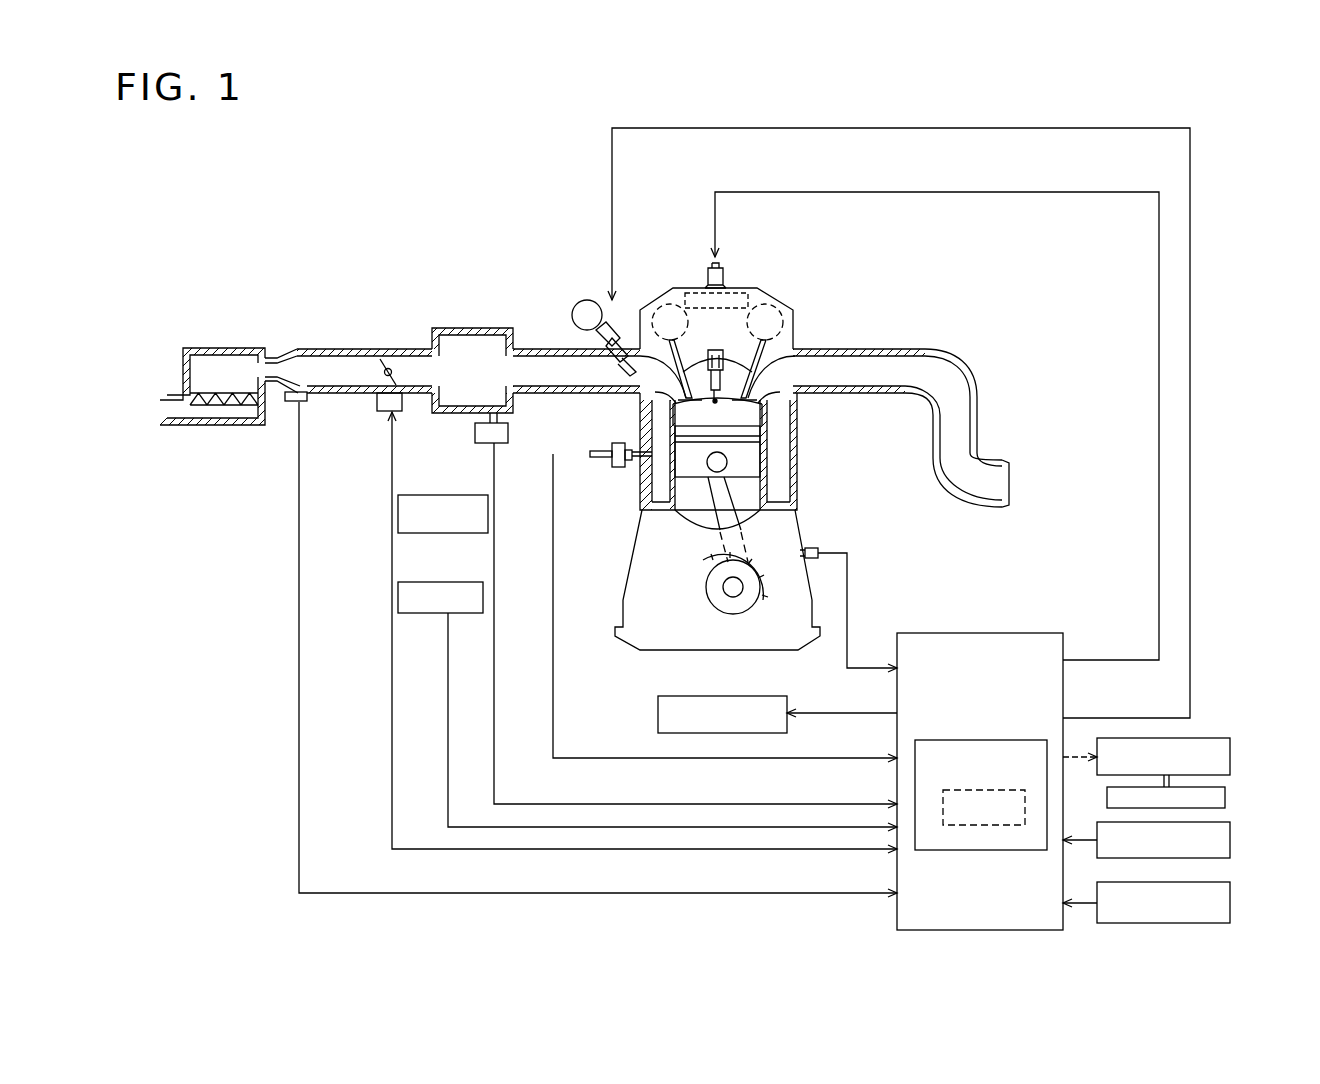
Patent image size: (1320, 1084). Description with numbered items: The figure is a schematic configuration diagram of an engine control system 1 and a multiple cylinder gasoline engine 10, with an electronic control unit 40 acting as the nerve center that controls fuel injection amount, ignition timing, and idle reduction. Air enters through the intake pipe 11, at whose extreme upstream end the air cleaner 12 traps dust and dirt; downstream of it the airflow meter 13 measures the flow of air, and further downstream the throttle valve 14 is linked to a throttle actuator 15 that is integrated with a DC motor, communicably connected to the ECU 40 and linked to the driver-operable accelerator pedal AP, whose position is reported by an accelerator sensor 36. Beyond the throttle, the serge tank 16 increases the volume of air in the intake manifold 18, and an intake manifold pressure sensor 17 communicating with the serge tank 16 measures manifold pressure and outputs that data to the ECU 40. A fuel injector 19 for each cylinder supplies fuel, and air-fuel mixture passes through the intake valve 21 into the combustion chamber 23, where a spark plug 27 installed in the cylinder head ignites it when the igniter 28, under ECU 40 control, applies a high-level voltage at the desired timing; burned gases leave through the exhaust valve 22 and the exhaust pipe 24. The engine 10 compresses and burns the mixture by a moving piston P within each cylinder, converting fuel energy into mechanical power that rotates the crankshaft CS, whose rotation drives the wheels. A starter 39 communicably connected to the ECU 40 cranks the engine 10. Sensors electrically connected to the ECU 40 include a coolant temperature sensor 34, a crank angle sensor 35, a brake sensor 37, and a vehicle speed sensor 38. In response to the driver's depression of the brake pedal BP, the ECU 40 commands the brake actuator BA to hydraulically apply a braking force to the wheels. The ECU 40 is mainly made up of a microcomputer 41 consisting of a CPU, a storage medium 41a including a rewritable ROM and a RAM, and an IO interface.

The engine control system 1 is at (1232, 596).
The engine 10 is at (755, 453).
The intake pipe 11 is at (383, 349).
The air cleaner 12 is at (232, 403).
The airflow meter 13 is at (290, 401).
The throttle valve 14 is at (384, 365).
The throttle actuator 15 is at (383, 411).
The serge tank 16 is at (474, 328).
The intake manifold pressure sensor 17 is at (475, 434).
The intake manifold 18 is at (545, 393).
The fuel injector 19 is at (594, 344).
The intake valve 21 is at (648, 404).
The exhaust valve 22 is at (790, 372).
The combustion chamber 23 is at (743, 413).
The exhaust pipe 24 is at (905, 349).
The spark plug 27 is at (721, 361).
The igniter 28 is at (726, 281).
The coolant temperature sensor 34 is at (618, 467).
The crank angle sensor 35 is at (808, 548).
The accelerator sensor 36 is at (408, 582).
The brake sensor 37 is at (1231, 843).
The vehicle speed sensor 38 is at (1231, 904).
The starter 39 is at (658, 715).
The electronic control unit 40 is at (1052, 633).
The microcomputer 41 is at (1022, 740).
The storage medium 41a is at (988, 825).
The accelerator pedal AP is at (437, 495).
The brake actuator BA is at (1231, 746).
The brake pedal BP is at (1225, 797).
The crankshaft CS is at (760, 615).
The piston P is at (717, 470).